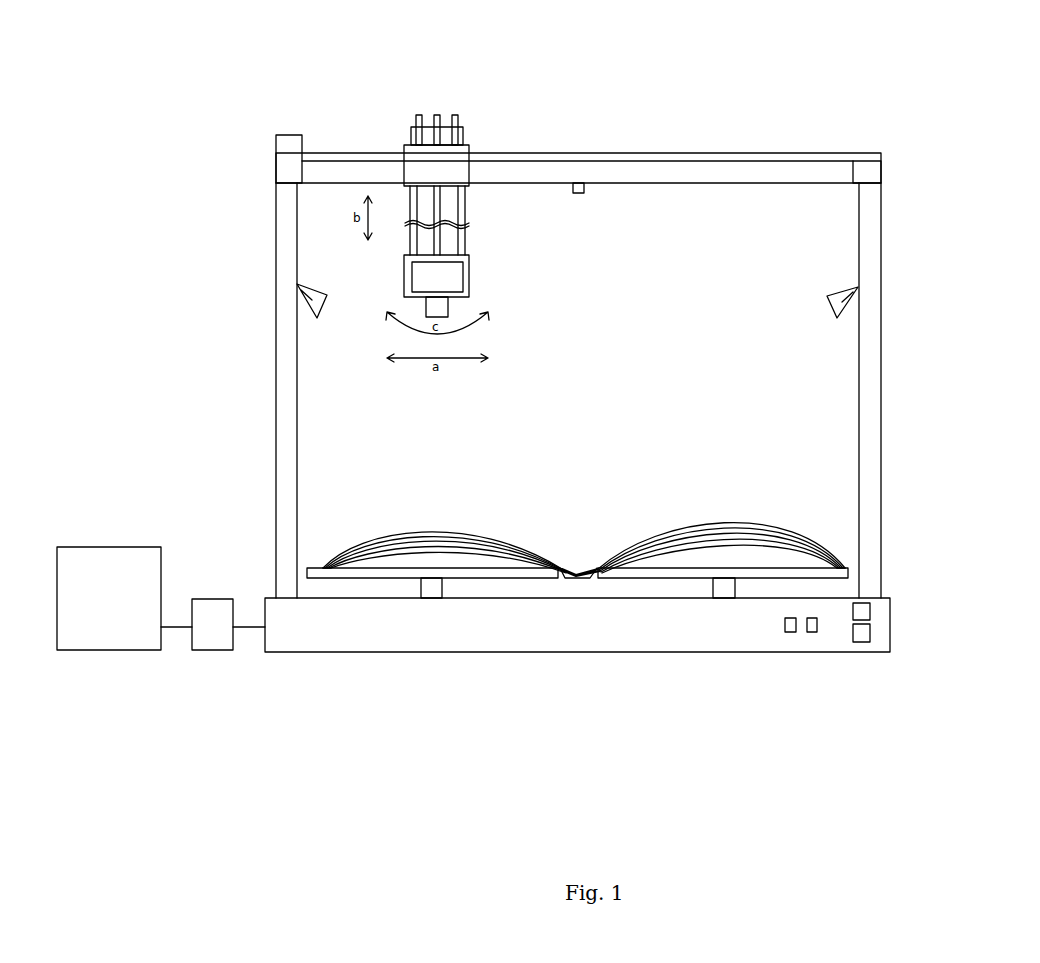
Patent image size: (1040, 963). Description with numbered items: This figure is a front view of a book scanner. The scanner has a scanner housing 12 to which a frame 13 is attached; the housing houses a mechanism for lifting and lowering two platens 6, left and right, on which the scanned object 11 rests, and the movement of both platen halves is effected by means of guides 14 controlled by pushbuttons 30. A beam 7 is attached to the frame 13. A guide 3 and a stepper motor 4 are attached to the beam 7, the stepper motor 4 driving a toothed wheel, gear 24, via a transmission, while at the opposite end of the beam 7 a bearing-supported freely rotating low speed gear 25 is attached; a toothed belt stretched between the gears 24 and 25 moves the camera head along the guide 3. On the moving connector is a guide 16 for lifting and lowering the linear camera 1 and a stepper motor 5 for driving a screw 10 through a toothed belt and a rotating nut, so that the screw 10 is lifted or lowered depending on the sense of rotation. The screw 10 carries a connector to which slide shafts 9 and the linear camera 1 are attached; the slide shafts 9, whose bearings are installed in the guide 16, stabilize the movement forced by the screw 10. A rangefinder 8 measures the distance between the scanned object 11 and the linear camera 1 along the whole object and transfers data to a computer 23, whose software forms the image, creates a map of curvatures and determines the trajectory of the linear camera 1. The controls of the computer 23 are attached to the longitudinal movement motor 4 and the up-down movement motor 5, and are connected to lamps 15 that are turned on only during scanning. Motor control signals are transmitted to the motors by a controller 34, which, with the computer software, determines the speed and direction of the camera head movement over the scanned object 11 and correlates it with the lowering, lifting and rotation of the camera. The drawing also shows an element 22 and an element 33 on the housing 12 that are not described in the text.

The linear camera 1 is at (447, 273).
The guide 3 is at (717, 157).
The stepper motor 4 is at (293, 145).
The stepper motor 5 is at (443, 130).
The platens 6 is at (320, 572).
The beam 7 is at (793, 172).
The rangefinder 8 is at (578, 188).
The slide shafts 9 is at (412, 210).
The screw 10 is at (433, 210).
The scanned object 11 is at (687, 545).
The scanner housing 12 is at (595, 628).
The frame 13 is at (868, 392).
The guides 14 is at (432, 590).
The lamps 15 is at (307, 301).
The guide 16 is at (460, 165).
The control panel 22 is at (860, 610).
The computer 23 is at (90, 572).
The gear 24 is at (285, 170).
The low speed gear 25 is at (870, 170).
The pushbuttons 30 is at (828, 667).
The indicator 33 is at (860, 633).
The controller 34 is at (212, 628).